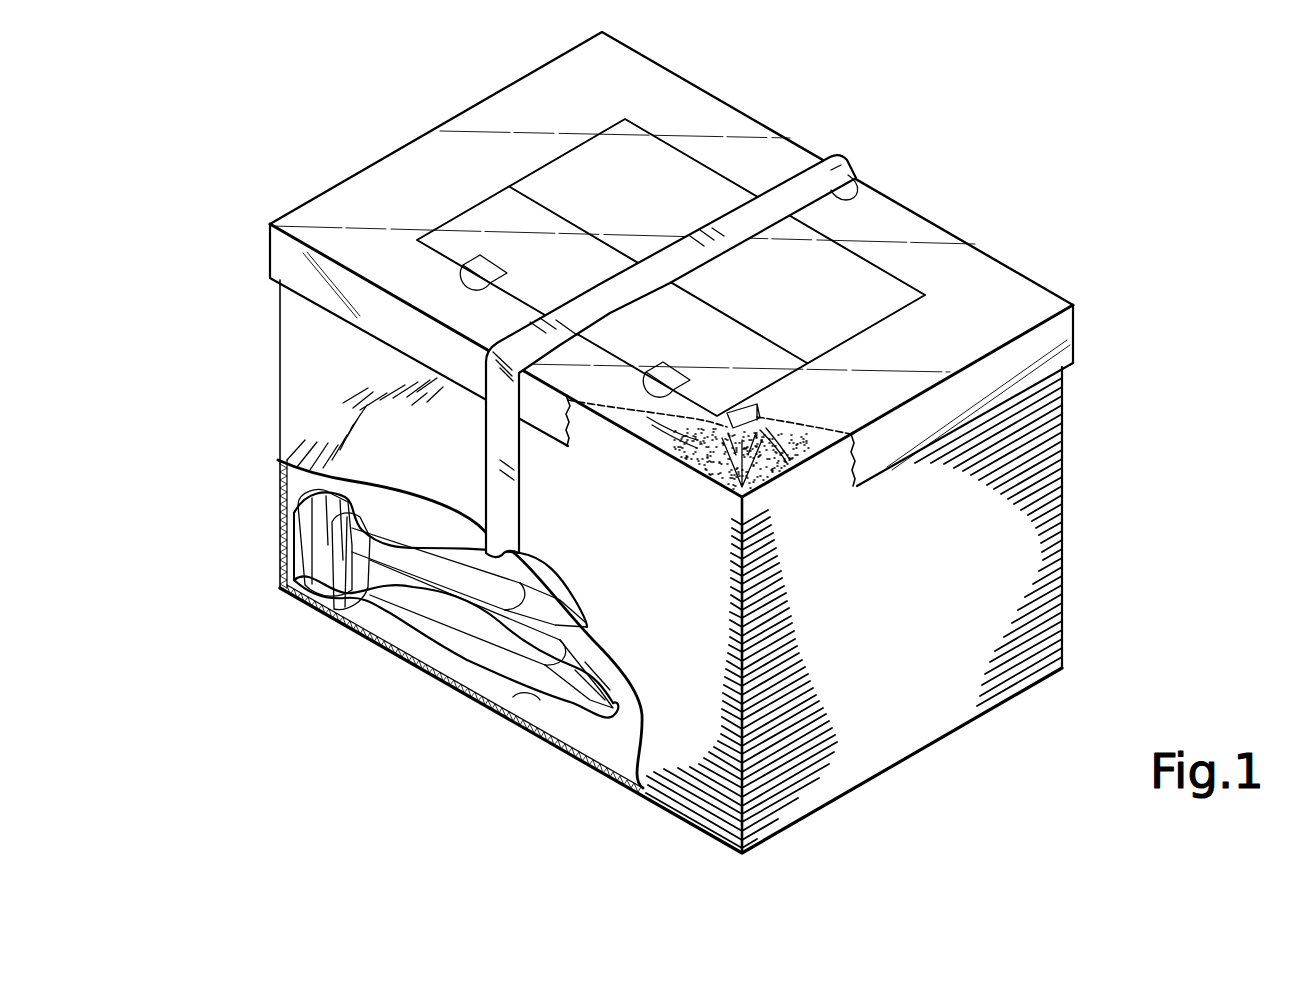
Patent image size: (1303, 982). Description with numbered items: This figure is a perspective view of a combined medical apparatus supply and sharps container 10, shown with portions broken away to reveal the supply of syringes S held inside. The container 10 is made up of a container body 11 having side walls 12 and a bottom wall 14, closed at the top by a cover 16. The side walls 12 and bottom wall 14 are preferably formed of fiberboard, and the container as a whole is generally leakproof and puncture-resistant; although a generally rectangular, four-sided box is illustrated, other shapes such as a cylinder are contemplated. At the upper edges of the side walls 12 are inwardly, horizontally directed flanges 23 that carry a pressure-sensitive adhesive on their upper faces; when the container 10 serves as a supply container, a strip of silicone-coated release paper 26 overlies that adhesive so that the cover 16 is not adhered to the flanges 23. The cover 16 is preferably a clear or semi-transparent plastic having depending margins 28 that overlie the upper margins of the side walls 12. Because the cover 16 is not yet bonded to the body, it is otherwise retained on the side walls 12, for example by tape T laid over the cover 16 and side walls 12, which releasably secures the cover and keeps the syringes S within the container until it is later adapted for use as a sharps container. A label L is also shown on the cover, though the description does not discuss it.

The combined medical apparatus supply and sharps container 10 is at (937, 782).
The container body 11 is at (762, 740).
The side walls 12 is at (913, 713).
The bottom wall 14 is at (710, 463).
The cover 16 is at (338, 205).
The flanges 23 is at (751, 433).
The release paper 26 is at (773, 433).
The depending margins 28 is at (1010, 367).
The label L is at (560, 176).
The tape T is at (870, 193).
The syringes S is at (385, 596).